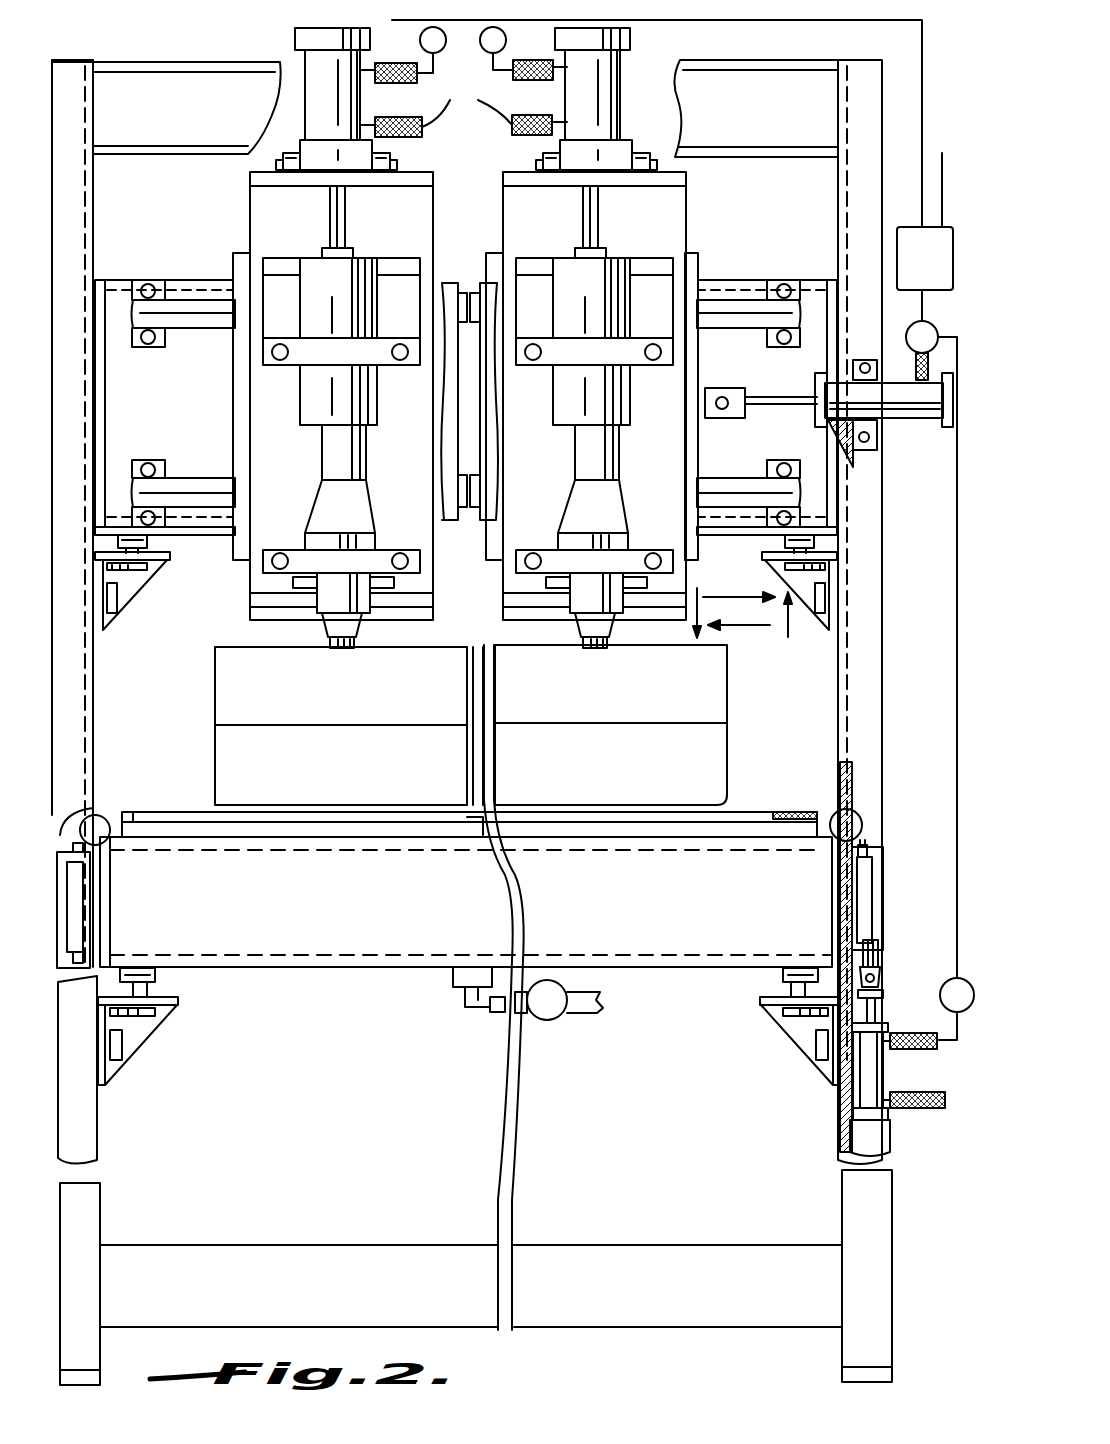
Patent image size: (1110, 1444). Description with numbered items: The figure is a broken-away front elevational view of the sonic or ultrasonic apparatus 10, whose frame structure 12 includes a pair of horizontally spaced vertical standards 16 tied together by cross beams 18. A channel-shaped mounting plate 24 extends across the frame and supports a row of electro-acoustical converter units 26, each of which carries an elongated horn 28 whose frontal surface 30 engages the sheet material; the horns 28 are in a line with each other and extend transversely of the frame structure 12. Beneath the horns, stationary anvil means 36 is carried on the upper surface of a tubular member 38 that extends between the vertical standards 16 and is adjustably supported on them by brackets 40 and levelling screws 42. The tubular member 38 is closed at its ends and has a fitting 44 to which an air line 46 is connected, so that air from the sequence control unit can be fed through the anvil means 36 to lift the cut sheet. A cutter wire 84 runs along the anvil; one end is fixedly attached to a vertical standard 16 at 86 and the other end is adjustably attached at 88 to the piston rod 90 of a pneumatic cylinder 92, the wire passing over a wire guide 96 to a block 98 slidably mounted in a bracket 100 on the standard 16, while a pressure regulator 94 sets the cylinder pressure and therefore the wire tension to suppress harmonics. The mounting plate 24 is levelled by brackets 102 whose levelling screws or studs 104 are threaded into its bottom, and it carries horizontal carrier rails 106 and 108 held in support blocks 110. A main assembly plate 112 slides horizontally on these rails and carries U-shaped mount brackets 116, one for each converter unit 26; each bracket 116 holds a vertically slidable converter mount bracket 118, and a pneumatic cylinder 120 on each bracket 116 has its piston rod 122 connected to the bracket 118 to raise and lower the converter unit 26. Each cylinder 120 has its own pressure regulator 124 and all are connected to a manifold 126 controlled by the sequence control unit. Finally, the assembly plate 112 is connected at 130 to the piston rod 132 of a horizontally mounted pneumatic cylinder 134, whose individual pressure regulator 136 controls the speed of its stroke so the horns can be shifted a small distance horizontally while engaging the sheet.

The sonic or ultrasonic apparatus 10 is at (186, 44).
The frame structure 12 is at (800, 56).
The vertical standards 16 is at (880, 690).
The cross beams 18 is at (832, 160).
The mounting plate 24 is at (186, 280).
The electro-acoustical converter units 26 is at (250, 612).
The horn 28 is at (215, 690).
The frontal surface 30 is at (306, 830).
The anvil means 36 is at (688, 822).
The tubular member 38 is at (338, 968).
The brackets 40 is at (148, 1046).
The levelling screws 42 is at (172, 1000).
The fitting 44 is at (455, 987).
The air line 46 is at (566, 1014).
The cutter wire 84 is at (120, 812).
The fixed attachment 86 is at (63, 832).
The adjustable attachment 88 is at (862, 885).
The piston rod 90 is at (880, 1011).
The pneumatic or air cylinder 92 is at (888, 1080).
The pressure regulator 94 is at (923, 978).
The wire guide 96 is at (850, 810).
The block 98 is at (872, 848).
The bracket 100 is at (870, 905).
The brackets 102 is at (170, 560).
The levelling screws or studs 104 is at (147, 540).
The carrier rail 106 is at (205, 488).
The carrier rail 108 is at (198, 329).
The support blocks 110 is at (150, 347).
The main assembly plate 112 is at (732, 222).
The U-shaped air cylinder and horn assembly mount bracket 116 is at (438, 222).
The converter mount bracket 118 is at (392, 257).
The pneumatic or air cylinders 120 is at (296, 42).
The piston rods 122 is at (332, 222).
The pressure regulator 124 is at (463, 78).
The manifold 126 is at (734, 97).
The connection 130 is at (745, 418).
The piston rod 132 is at (740, 397).
The horizontally mounted pneumatic or air cylinder 134 is at (907, 420).
The pressure regulator 136 is at (913, 330).